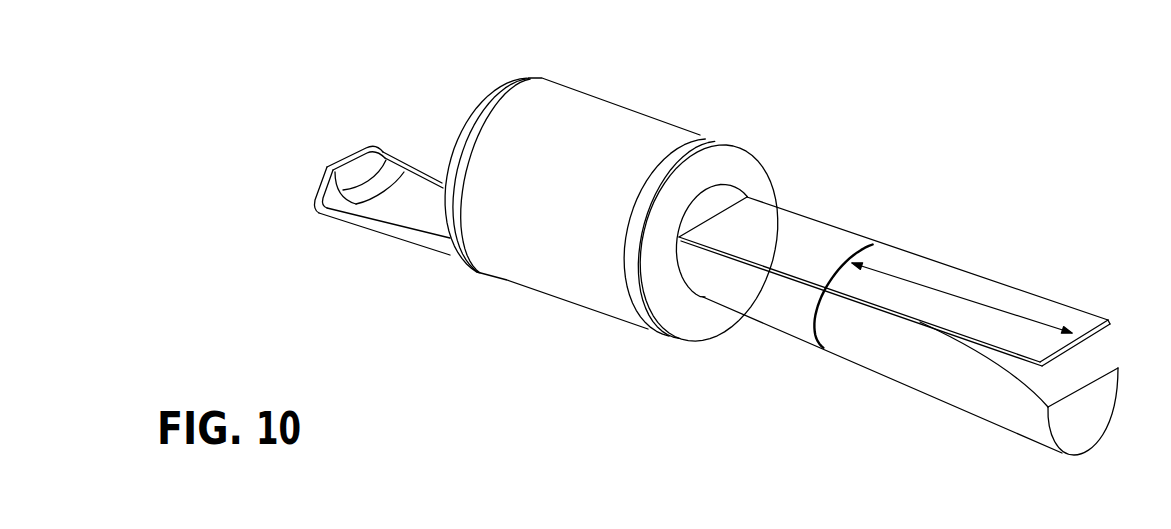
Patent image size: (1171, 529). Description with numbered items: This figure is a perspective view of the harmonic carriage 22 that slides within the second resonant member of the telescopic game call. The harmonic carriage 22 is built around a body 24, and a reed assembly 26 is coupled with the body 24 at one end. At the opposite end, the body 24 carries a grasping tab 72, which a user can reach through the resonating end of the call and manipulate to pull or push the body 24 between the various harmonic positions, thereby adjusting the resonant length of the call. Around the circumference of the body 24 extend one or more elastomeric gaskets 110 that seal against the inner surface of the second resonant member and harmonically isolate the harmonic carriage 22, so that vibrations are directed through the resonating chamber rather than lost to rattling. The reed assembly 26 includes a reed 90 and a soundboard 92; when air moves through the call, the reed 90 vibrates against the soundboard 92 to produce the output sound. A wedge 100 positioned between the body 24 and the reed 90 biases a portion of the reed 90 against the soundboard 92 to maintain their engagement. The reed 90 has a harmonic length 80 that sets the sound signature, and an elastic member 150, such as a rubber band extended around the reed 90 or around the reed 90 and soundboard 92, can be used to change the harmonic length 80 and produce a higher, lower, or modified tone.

The harmonic carriage 22 is at (513, 295).
The body 24 is at (614, 145).
The reed assembly 26 is at (755, 335).
The grasping tab 72 is at (347, 160).
The harmonic length 80 is at (950, 295).
The reed 90 is at (1083, 328).
The soundboard 92 is at (1007, 397).
The wedge 100 is at (720, 203).
The gasket 110 is at (542, 77).
The elastic member 150 is at (871, 243).